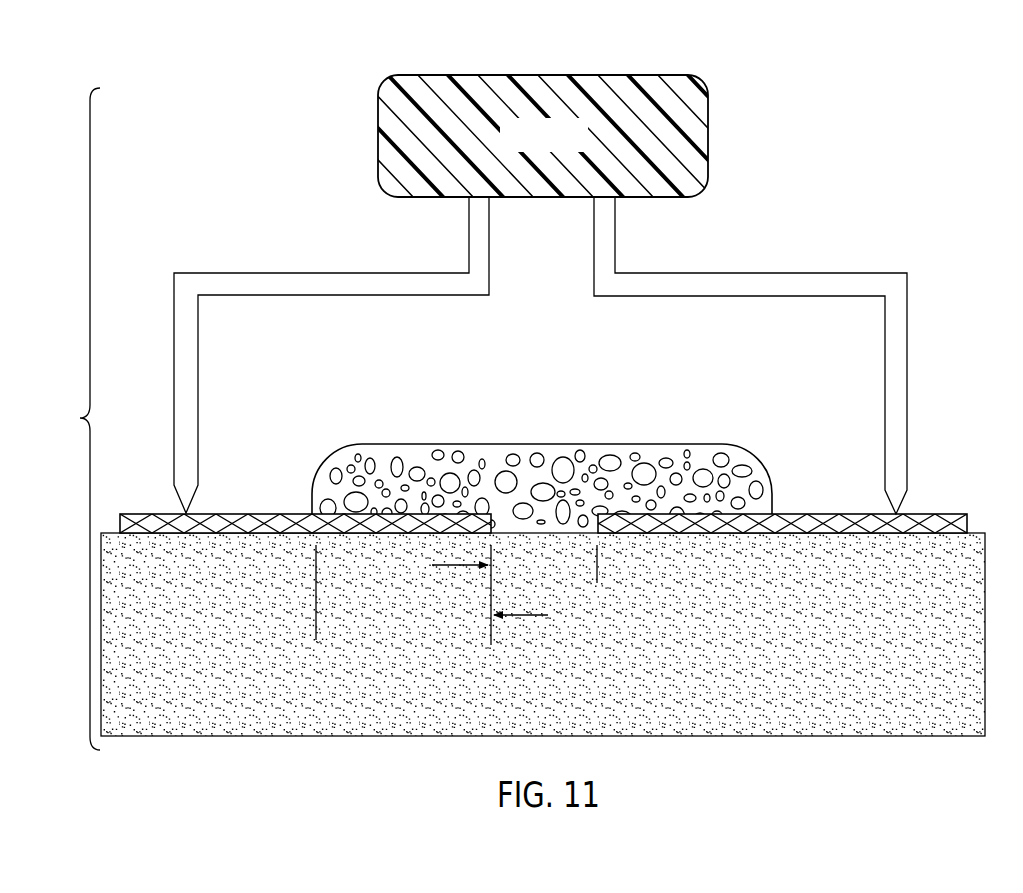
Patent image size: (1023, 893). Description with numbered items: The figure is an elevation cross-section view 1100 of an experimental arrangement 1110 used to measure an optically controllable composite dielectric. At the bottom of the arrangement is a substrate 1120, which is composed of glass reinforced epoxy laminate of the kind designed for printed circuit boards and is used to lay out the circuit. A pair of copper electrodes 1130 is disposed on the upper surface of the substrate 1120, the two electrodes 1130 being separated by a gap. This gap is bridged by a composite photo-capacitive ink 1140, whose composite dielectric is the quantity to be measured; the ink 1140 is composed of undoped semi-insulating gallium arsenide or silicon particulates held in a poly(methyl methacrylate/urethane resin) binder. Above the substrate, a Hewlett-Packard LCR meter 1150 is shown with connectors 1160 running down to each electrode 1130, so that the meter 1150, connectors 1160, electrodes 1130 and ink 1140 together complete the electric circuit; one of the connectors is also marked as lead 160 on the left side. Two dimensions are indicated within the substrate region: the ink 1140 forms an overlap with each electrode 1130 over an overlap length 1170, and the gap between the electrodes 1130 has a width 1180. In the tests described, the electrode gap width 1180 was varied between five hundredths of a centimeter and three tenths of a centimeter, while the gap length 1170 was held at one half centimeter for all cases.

The elevation cross-section view 1100 is at (826, 116).
The experimental arrangement 1110 is at (522, 407).
The substrate 1120 is at (966, 737).
The copper electrodes 1130 is at (262, 513).
The composite photo-capacitive ink 1140 is at (705, 444).
The HP-4284A meter 1150 is at (660, 75).
The first probe lead 160 is at (240, 273).
The connectors 1160 is at (862, 273).
The overlap length 1170 is at (313, 598).
The gap width 1180 is at (600, 567).